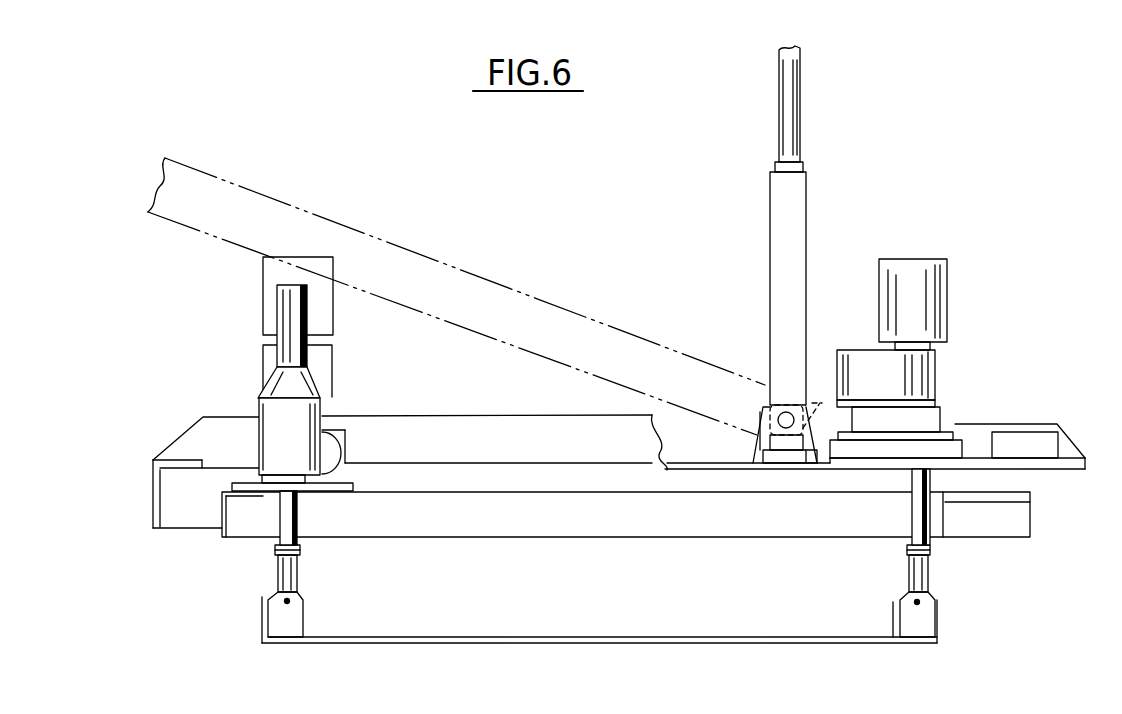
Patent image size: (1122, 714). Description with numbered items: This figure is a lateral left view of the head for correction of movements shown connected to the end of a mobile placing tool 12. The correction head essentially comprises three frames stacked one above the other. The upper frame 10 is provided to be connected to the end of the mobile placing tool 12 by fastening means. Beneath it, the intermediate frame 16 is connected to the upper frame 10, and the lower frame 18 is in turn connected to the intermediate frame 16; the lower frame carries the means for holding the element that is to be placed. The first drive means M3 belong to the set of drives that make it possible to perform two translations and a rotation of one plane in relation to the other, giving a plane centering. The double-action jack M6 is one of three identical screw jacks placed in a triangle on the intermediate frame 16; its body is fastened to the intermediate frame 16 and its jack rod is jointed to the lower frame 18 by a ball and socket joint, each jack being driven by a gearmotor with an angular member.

The upper frame 10 is at (185, 447).
The mobile placing tool 12 is at (800, 236).
The intermediate frame 16 is at (440, 517).
The lower frame 18 is at (535, 637).
The double-action jack M6 is at (316, 309).
The first drive means M3 is at (893, 300).